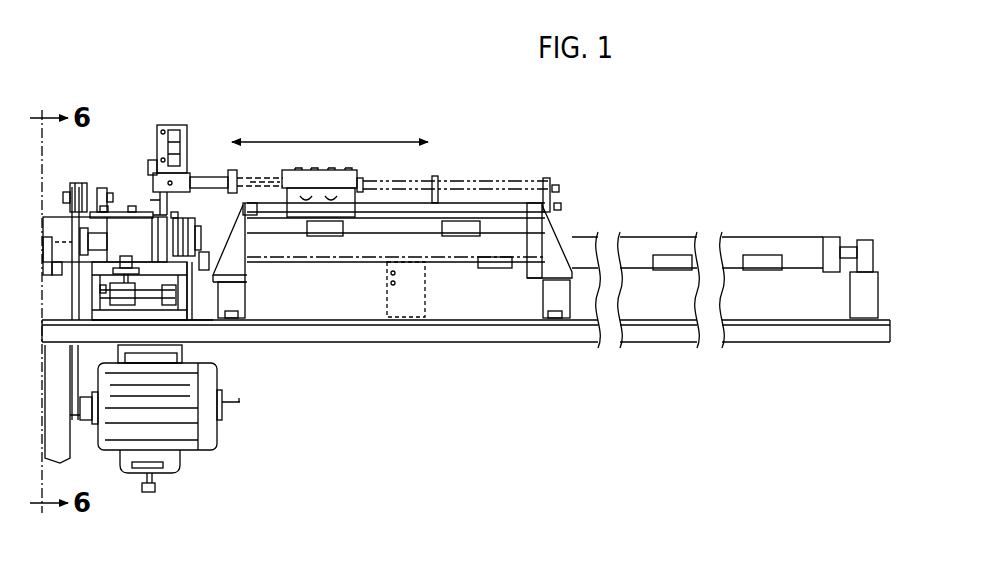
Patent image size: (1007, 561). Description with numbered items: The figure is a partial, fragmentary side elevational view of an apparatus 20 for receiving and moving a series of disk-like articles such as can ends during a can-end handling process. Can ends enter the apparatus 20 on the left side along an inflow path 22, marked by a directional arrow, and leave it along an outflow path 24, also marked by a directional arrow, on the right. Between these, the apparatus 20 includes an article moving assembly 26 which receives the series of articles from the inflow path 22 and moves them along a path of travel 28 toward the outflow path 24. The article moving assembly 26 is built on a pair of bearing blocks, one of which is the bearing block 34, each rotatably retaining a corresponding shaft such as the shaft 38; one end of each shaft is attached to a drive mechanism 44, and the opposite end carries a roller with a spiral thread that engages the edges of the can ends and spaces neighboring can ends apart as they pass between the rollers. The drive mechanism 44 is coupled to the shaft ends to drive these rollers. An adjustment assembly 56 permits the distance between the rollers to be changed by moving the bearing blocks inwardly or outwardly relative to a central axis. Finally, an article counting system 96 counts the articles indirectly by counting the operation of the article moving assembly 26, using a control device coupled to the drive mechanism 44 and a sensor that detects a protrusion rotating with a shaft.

The apparatus 20 is at (136, 113).
The inflow path 22 is at (38, 238).
The outflow path 24 is at (640, 223).
The article moving assembly 26 is at (197, 209).
The path of travel 28 is at (217, 227).
The bearing block 34 is at (123, 207).
The shaft 38 is at (97, 288).
The drive mechanism 44 is at (212, 432).
The adjustment assembly 56 is at (193, 310).
The article counting system 96 is at (152, 205).